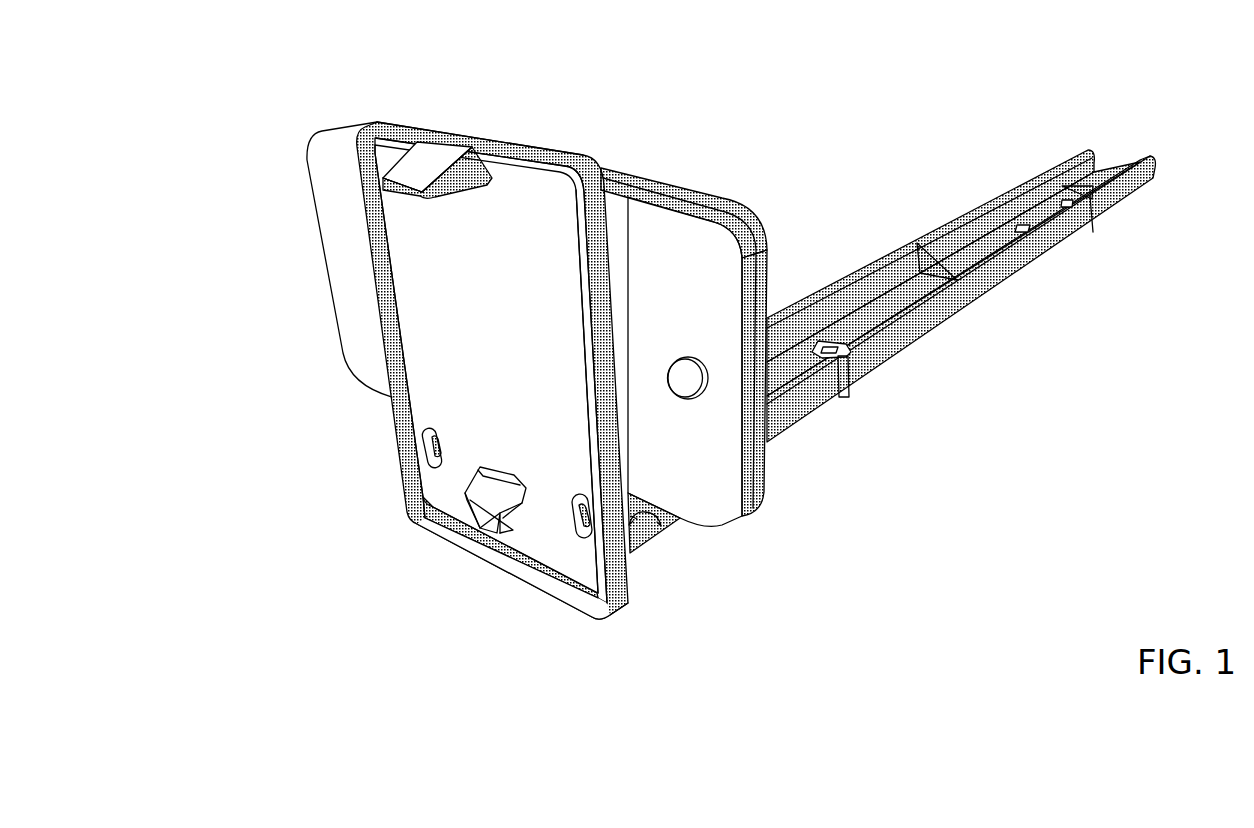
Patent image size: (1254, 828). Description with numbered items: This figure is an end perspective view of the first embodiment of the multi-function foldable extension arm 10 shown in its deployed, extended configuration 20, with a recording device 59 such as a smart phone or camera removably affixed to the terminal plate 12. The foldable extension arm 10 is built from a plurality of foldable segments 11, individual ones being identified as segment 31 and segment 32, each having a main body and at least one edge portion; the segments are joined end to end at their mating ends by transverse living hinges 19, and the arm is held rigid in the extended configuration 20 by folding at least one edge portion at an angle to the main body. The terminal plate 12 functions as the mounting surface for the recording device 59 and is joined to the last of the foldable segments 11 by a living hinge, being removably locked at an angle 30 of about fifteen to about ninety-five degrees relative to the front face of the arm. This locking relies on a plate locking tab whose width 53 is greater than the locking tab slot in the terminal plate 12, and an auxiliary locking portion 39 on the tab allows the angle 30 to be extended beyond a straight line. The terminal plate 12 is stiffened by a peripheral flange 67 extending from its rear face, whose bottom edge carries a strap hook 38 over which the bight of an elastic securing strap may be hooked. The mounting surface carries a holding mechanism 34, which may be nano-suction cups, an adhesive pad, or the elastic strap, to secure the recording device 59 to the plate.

The foldable extension arm 10 is at (722, 358).
The foldable segments 11 is at (979, 293).
The terminal plate 12 is at (443, 357).
The transverse living hinges 19 is at (957, 280).
The extended configuration 20 is at (928, 537).
The angle 30 is at (643, 513).
The segment 31 is at (797, 437).
The segment 32 is at (928, 340).
The holding mechanism 34 is at (415, 128).
The strap hook 38 is at (393, 187).
The auxiliary locking portion 39 is at (482, 482).
The width 53 is at (368, 563).
The recording device 59 is at (675, 192).
The peripheral flange 67 is at (575, 265).